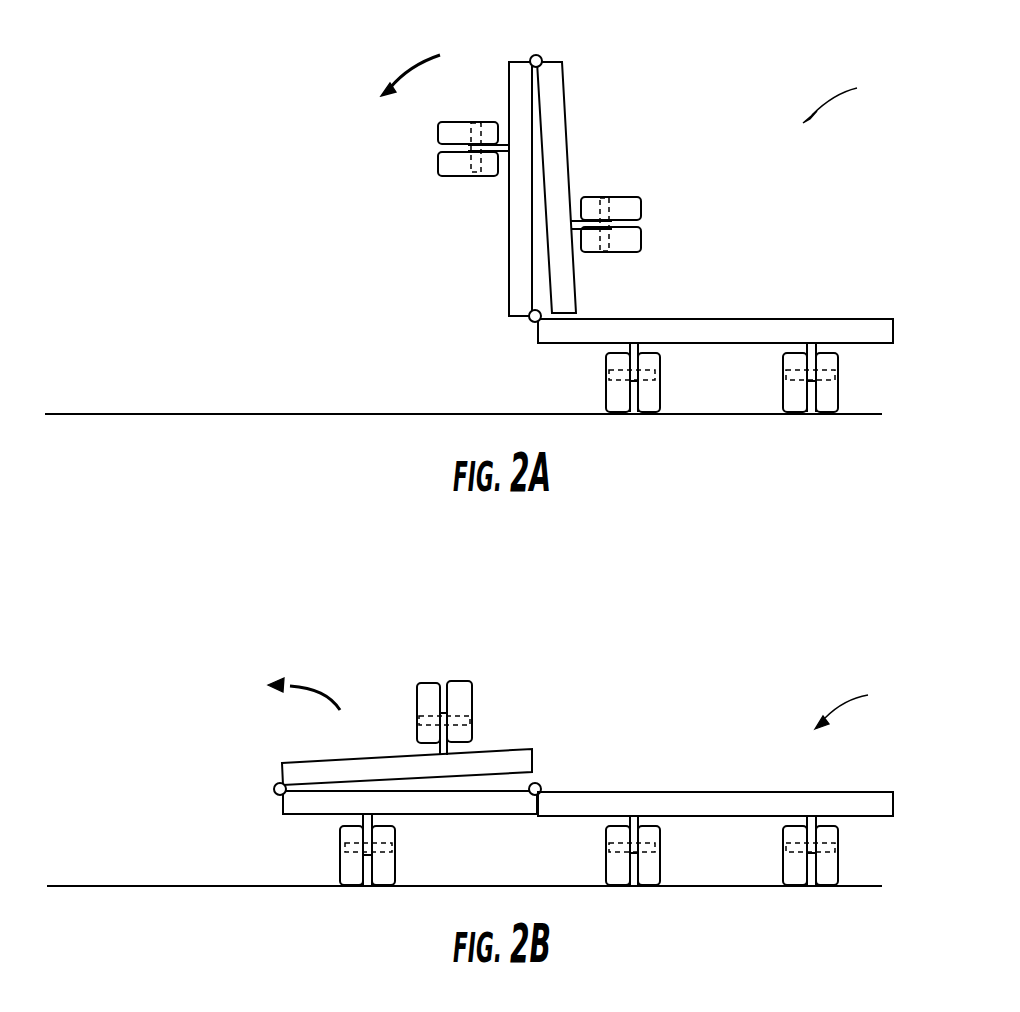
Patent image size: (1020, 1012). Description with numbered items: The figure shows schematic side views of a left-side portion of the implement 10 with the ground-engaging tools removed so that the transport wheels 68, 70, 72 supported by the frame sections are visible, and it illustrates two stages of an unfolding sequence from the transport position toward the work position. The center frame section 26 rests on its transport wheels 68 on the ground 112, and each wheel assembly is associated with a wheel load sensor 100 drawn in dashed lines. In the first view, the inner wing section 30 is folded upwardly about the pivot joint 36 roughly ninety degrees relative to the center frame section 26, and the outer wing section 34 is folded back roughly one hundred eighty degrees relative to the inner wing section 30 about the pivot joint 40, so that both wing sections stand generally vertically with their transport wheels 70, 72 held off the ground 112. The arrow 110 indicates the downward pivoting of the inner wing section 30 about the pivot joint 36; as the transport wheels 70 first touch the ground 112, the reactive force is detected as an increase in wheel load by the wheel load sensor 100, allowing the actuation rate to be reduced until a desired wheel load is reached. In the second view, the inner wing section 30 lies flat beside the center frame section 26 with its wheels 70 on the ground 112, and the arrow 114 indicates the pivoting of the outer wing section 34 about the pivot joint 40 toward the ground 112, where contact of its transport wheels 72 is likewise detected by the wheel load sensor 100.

In FIG. 2A, the implement 10 is at (843, 96).
In FIG. 2B, the implement 10 is at (855, 704).
In FIG. 2A, the center frame section 26 is at (775, 328).
In FIG. 2B, the center frame section 26 is at (683, 800).
In FIG. 2A, the inner wing section 30 is at (518, 232).
In FIG. 2B, the inner wing section 30 is at (467, 806).
In FIG. 2A, the outer wing section 34 is at (565, 117).
In FIG. 2B, the outer wing section 34 is at (370, 762).
In FIG. 2A, the pivot joint 36 is at (529, 320).
In FIG. 2B, the pivot joint 36 is at (540, 784).
In FIG. 2A, the pivot joint 40 is at (536, 54).
In FIG. 2B, the pivot joint 40 is at (275, 786).
In FIG. 2A, the transport wheels 68 is at (650, 412).
In FIG. 2B, the transport wheels 68 is at (650, 886).
In FIG. 2A, the transport wheels 70 is at (438, 130).
In FIG. 2B, the transport wheels 70 is at (385, 886).
In FIG. 2A, the transport wheels 72 is at (632, 205).
In FIG. 2B, the transport wheels 72 is at (460, 683).
In FIG. 2A, the wheel load sensor 100 is at (476, 122).
In FIG. 2B, the wheel load sensor 100 is at (422, 720).
In FIG. 2A, the arrow 110 is at (440, 55).
In FIG. 2A, the ground 112 is at (318, 413).
In FIG. 2B, the ground 112 is at (193, 885).
In FIG. 2B, the arrow 114 is at (308, 683).